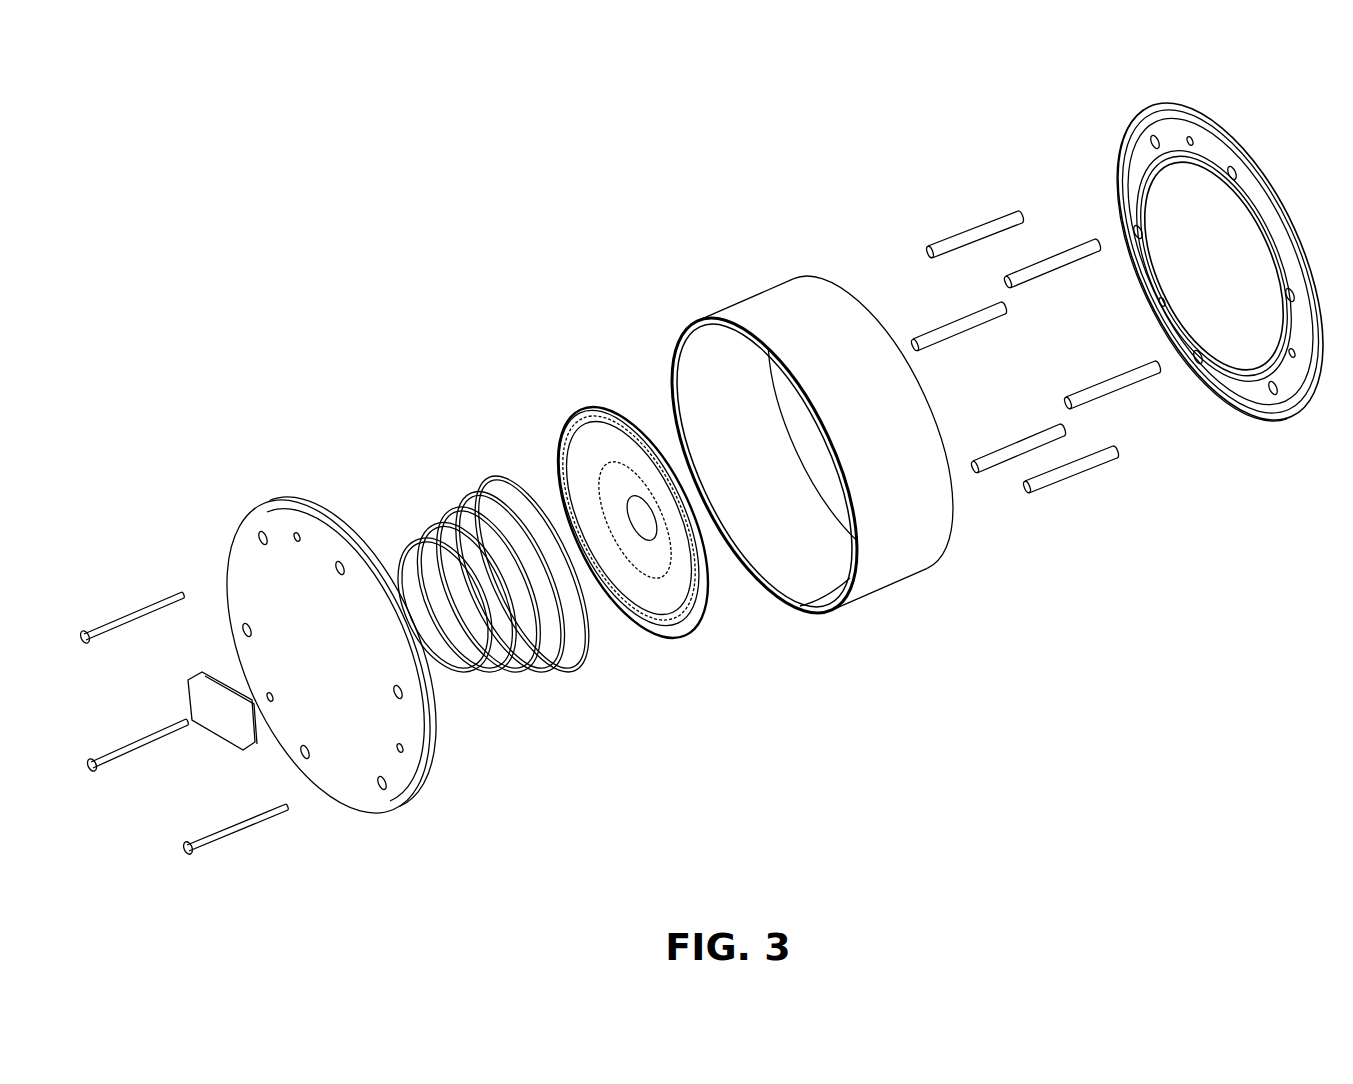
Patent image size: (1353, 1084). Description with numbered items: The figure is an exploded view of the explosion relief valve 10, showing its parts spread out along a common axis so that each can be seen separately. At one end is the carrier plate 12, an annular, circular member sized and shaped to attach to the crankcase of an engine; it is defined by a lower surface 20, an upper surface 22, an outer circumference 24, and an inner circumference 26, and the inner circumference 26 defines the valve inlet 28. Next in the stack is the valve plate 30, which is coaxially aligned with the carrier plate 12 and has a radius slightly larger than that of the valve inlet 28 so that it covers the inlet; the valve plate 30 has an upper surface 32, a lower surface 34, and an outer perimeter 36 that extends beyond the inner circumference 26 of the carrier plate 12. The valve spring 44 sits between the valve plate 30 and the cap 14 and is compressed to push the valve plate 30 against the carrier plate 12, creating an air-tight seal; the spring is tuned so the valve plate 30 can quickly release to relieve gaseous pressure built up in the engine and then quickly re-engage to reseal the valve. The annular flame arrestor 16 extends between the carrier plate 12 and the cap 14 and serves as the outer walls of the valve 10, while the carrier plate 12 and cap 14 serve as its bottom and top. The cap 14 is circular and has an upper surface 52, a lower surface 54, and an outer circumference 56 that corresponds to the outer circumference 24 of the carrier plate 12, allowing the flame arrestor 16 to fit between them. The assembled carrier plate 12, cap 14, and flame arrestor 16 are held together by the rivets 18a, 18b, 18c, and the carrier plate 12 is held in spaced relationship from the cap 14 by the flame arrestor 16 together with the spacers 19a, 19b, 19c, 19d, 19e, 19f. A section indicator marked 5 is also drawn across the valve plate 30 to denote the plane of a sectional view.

The explosion relief valve 10 is at (266, 153).
The carrier plate 12 is at (1279, 141).
The cap 14 is at (289, 466).
The annular flame arrestor 16 is at (736, 280).
The rivet 18a is at (113, 757).
The rivet 18b is at (125, 620).
The rivet 18c is at (214, 840).
The spacer 19a is at (990, 459).
The spacer 19b is at (935, 335).
The spacer 19c is at (985, 229).
The spacer 19d is at (1053, 262).
The spacer 19e is at (1090, 394).
The spacer 19f is at (1068, 472).
The lower surface 20 is at (1222, 124).
The upper surface 22 is at (1240, 390).
The outer circumference 24 is at (1136, 128).
The inner circumference 26 is at (1273, 270).
The valve inlet 28 is at (1176, 230).
The valve plate 30 is at (546, 468).
The upper surface 32 is at (662, 590).
The lower surface 34 is at (640, 418).
The outer perimeter 36 is at (712, 588).
The valve spring 44 is at (431, 490).
The upper surface 52 is at (345, 785).
The lower surface 54 is at (353, 530).
The outer circumference 56 is at (246, 517).
The section line 5 is at (585, 400).